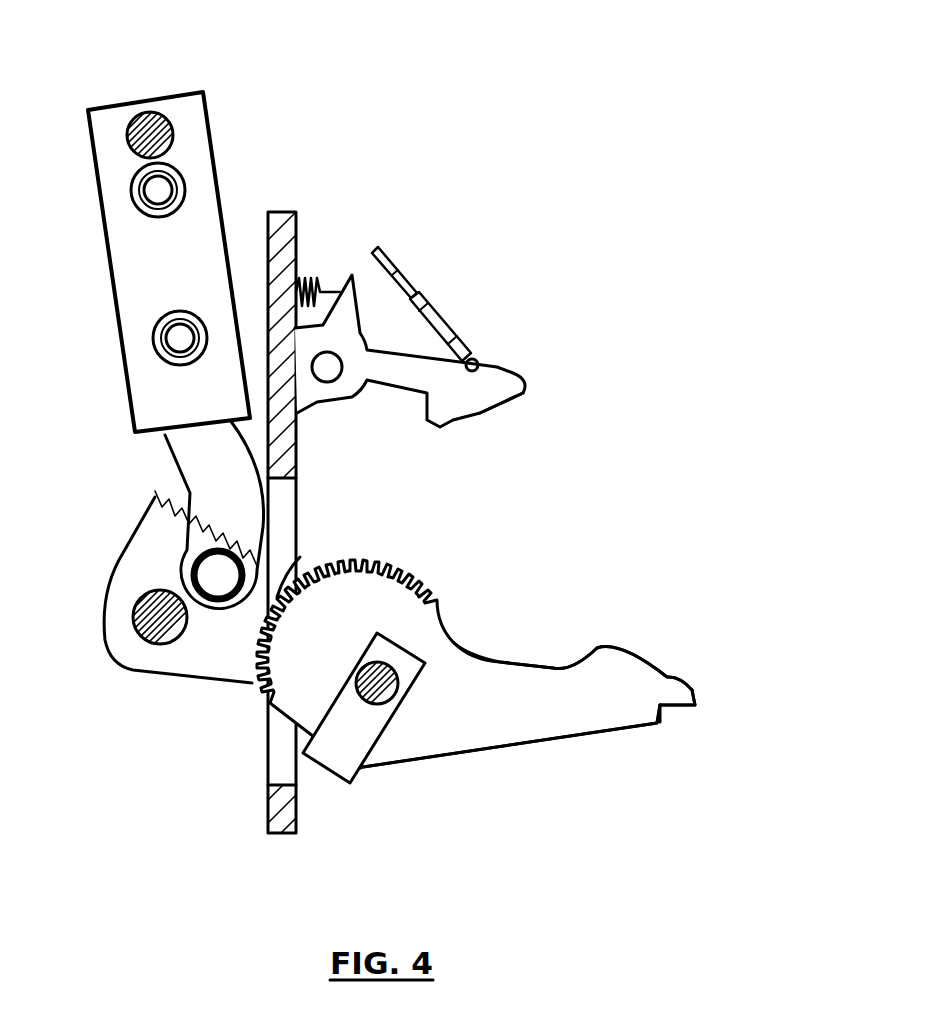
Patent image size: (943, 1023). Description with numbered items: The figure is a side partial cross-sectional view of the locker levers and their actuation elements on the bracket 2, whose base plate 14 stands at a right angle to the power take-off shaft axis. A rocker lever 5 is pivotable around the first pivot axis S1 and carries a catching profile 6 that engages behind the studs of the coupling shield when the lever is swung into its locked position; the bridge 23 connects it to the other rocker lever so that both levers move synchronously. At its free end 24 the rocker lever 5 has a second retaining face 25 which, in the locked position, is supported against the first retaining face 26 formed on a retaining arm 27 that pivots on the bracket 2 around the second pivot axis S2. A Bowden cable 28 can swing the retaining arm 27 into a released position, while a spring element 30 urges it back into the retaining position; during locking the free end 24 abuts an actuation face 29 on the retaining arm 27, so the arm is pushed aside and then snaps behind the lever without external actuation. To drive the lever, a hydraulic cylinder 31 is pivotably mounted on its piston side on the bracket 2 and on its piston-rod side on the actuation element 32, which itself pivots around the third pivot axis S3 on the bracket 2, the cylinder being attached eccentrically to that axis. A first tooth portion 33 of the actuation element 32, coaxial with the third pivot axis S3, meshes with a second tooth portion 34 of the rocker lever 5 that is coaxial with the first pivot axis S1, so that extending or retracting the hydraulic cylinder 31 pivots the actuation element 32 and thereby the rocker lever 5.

The bracket 2 is at (284, 192).
The rocker lever 5 is at (513, 717).
The catching profile 6 is at (513, 660).
The base plate 14 is at (298, 237).
The bridge 23 is at (332, 748).
The free end 24 is at (695, 697).
The second retaining face 25 is at (673, 707).
The first retaining face 26 is at (427, 407).
The retaining arm 27 is at (487, 360).
The Bowden cable 28 is at (440, 313).
The actuation face 29 is at (493, 408).
The spring element 30 is at (327, 272).
The hydraulic cylinder 31 is at (184, 118).
The actuation element 32 is at (212, 648).
The first tooth portion 33 is at (300, 557).
The second tooth portion 34 is at (403, 572).
The first pivot axis S1 is at (383, 707).
The second pivot axis S2 is at (336, 382).
The third pivot axis S3 is at (143, 647).